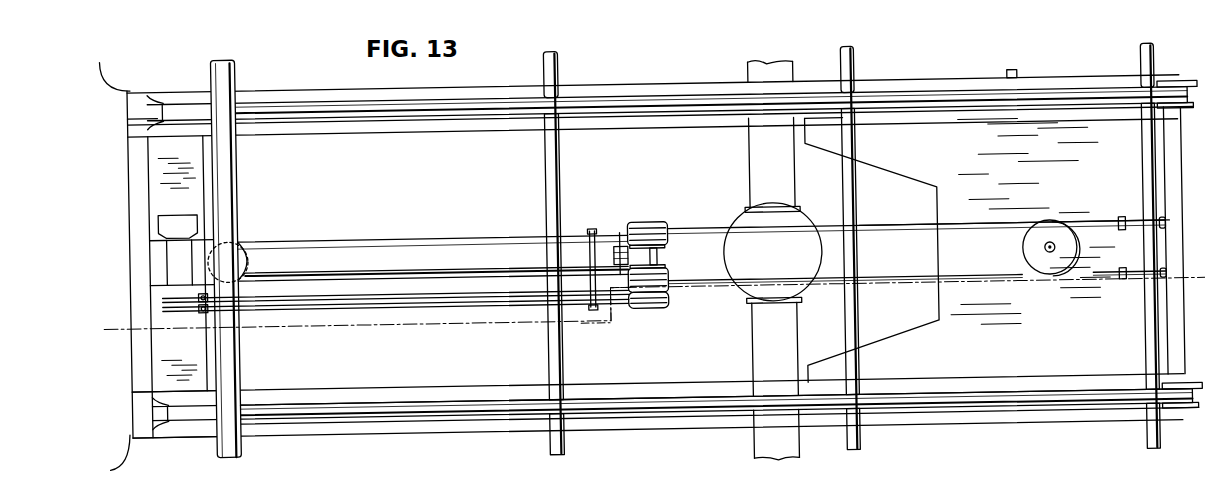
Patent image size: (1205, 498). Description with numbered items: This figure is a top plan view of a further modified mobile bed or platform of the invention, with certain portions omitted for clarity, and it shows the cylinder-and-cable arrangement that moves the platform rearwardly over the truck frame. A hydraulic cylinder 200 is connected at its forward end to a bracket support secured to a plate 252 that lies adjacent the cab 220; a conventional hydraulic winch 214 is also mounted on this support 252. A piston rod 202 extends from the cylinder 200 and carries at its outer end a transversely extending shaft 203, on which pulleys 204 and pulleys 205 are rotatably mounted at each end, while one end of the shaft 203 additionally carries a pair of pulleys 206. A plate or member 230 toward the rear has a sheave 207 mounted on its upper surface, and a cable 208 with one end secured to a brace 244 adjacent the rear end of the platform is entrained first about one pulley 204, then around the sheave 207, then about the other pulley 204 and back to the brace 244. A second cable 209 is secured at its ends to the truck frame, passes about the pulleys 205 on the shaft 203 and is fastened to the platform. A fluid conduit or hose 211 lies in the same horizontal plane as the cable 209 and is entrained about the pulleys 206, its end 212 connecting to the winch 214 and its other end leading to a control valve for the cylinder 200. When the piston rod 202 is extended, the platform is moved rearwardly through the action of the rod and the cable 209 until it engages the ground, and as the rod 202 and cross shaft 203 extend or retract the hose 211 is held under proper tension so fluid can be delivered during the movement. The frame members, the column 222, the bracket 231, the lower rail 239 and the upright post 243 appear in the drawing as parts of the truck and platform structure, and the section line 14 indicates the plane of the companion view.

The section line of FIG. 14 is at (121, 291).
The hydraulic cylinder 200 is at (463, 240).
The piston rod 202 is at (622, 247).
The transversely extending shaft 203 is at (657, 257).
The pulley 204 is at (650, 222).
The pulley 205 is at (660, 248).
The pair of pulleys 206 is at (637, 304).
The sheave 207 is at (1039, 269).
The cable 208 is at (879, 228).
The second cable 209 is at (369, 237).
The fluid conduit or hose 211 is at (407, 304).
The end of hose 212 is at (201, 308).
The hydraulic winch 214 is at (187, 214).
The cab 220 is at (130, 433).
The column with spherical housing 222 is at (761, 185).
The plate or member 230 is at (1032, 221).
The angled bracket 231 is at (827, 141).
The lower rail 239 is at (283, 403).
The upright post top 243 is at (560, 65).
The brace 244 is at (558, 166).
The plate or support 252 is at (201, 179).